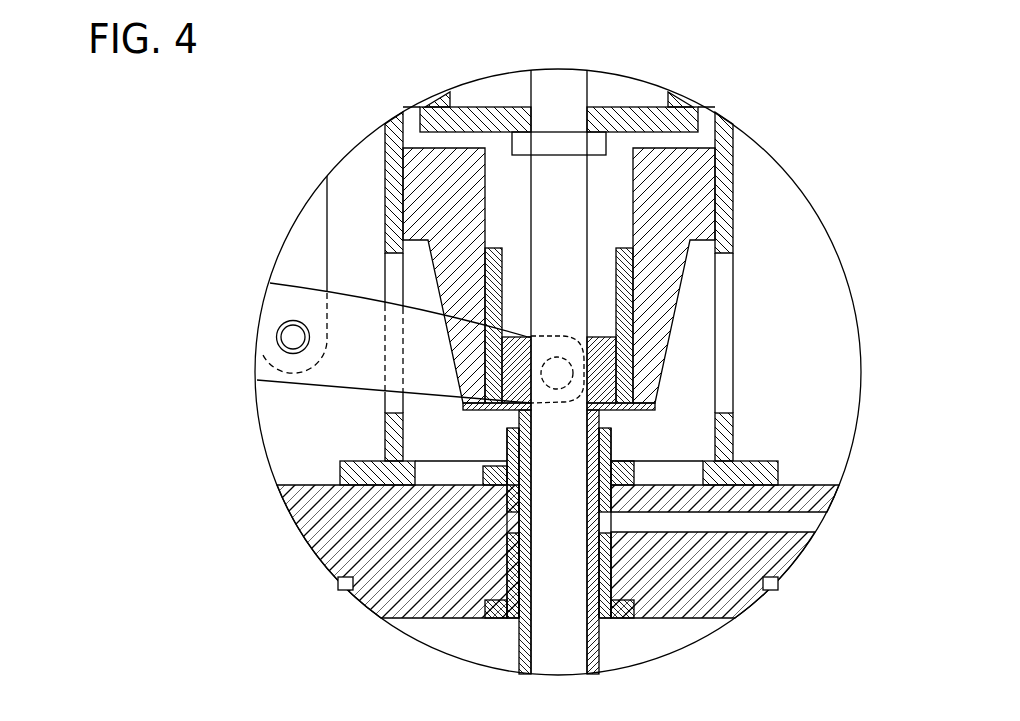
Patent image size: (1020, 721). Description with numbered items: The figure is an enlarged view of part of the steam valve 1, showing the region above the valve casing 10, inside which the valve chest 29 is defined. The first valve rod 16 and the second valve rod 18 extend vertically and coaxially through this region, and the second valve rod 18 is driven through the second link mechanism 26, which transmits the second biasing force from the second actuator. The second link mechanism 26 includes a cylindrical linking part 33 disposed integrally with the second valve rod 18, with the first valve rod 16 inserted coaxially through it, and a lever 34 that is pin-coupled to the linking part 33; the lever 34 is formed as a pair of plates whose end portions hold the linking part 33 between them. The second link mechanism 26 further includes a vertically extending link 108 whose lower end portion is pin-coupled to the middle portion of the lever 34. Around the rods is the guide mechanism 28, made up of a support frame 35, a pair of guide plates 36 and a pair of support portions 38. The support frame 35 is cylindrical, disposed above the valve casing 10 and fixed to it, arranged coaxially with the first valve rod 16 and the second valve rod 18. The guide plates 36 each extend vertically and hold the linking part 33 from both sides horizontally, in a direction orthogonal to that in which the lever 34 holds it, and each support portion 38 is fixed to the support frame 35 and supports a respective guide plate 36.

The steam valve 1 is at (791, 88).
The link 108 is at (297, 243).
The guide mechanism 28 is at (751, 373).
The support frame 35 is at (733, 352).
The support portion 38 is at (660, 322).
The guide plate 36 is at (633, 350).
The linking part 33 is at (607, 383).
The first valve rod 16 is at (560, 298).
The second valve rod 18 is at (611, 442).
The valve casing 10 is at (804, 474).
The valve chest 29 is at (645, 655).
The second link mechanism 26 is at (263, 389).
The lever 34 is at (323, 391).